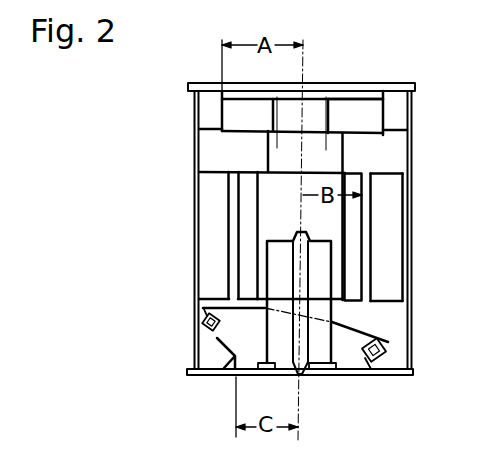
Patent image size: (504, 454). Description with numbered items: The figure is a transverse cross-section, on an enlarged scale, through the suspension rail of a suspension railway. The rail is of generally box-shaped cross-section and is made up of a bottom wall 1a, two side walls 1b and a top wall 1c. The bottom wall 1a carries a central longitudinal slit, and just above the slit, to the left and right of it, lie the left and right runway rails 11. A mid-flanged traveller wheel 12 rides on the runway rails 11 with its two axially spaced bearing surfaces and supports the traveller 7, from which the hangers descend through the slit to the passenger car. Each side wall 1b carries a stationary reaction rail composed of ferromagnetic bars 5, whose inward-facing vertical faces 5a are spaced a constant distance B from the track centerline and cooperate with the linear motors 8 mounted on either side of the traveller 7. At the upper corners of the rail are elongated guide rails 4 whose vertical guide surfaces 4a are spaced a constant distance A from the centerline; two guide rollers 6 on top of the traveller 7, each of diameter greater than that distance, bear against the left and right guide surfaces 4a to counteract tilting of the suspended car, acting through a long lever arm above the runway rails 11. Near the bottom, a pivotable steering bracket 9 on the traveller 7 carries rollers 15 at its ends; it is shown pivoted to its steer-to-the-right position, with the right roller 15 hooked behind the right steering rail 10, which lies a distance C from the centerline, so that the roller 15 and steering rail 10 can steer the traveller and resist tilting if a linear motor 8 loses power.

The bottom wall 1a is at (207, 377).
The side wall 1b is at (196, 246).
The top wall 1c is at (346, 86).
The guide rail 4 is at (397, 115).
The guide surface 4a is at (352, 117).
The ferromagnetic bar 5 is at (392, 253).
The vertical face 5a is at (368, 210).
The guide roller 6 is at (237, 140).
The traveller 7 is at (268, 211).
The linear motor 8 is at (246, 277).
The steering bracket 9 is at (358, 323).
The steering rail 10 is at (222, 343).
The runway rail 11 is at (328, 377).
The traveller wheel 12 is at (352, 377).
The roller 15 is at (205, 323).